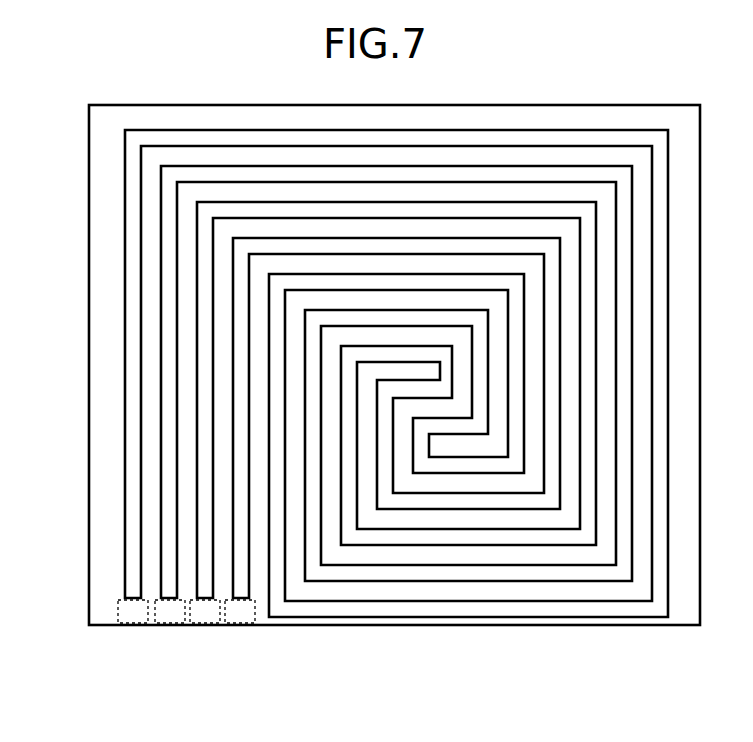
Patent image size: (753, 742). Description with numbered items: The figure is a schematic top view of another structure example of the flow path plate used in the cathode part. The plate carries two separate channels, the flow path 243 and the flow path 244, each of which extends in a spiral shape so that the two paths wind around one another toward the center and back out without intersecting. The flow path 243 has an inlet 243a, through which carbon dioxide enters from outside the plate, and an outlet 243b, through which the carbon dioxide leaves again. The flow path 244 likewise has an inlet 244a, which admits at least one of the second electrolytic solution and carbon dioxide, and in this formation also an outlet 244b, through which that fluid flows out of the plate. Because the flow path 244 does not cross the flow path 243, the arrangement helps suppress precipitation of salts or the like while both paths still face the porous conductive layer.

The flow path 243 is at (125, 520).
The flow path 244 is at (195, 297).
The inlet 243a is at (148, 627).
The outlet 243b is at (185, 627).
The inlet 244a is at (220, 627).
The outlet 244b is at (255, 627).